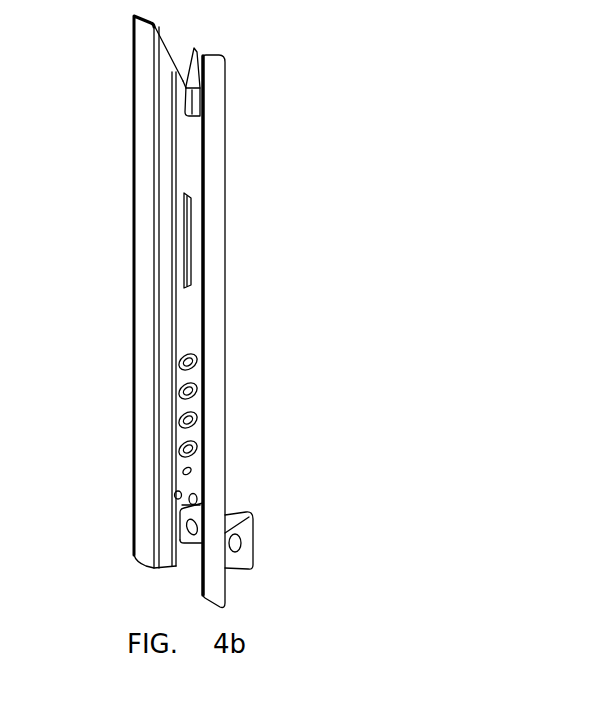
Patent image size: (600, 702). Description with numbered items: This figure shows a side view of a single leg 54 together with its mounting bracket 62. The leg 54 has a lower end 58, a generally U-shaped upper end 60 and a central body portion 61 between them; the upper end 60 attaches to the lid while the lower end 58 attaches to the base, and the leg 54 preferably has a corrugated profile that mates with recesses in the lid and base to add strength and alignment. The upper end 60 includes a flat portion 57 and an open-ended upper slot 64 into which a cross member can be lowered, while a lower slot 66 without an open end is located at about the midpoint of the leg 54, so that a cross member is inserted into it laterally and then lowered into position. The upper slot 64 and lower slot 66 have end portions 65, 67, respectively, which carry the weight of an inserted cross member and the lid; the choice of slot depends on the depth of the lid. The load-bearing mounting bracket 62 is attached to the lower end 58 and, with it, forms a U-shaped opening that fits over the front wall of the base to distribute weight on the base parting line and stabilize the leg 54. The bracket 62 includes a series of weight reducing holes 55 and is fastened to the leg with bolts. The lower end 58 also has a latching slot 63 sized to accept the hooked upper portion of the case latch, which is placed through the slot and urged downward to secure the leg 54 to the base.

The leg 54 is at (97, 59).
The weight reducing holes 55 is at (182, 373).
The flat portion 57 is at (199, 68).
The lower end 58 is at (146, 541).
The upper end 60 is at (211, 83).
The central body portion 61 is at (186, 312).
The mounting bracket 62 is at (243, 552).
The latching slot 63 is at (197, 519).
The upper slot 64 is at (190, 103).
The end portion of upper slot 65 is at (196, 108).
The lower slot 66 is at (186, 242).
The end portion of lower slot 67 is at (189, 285).